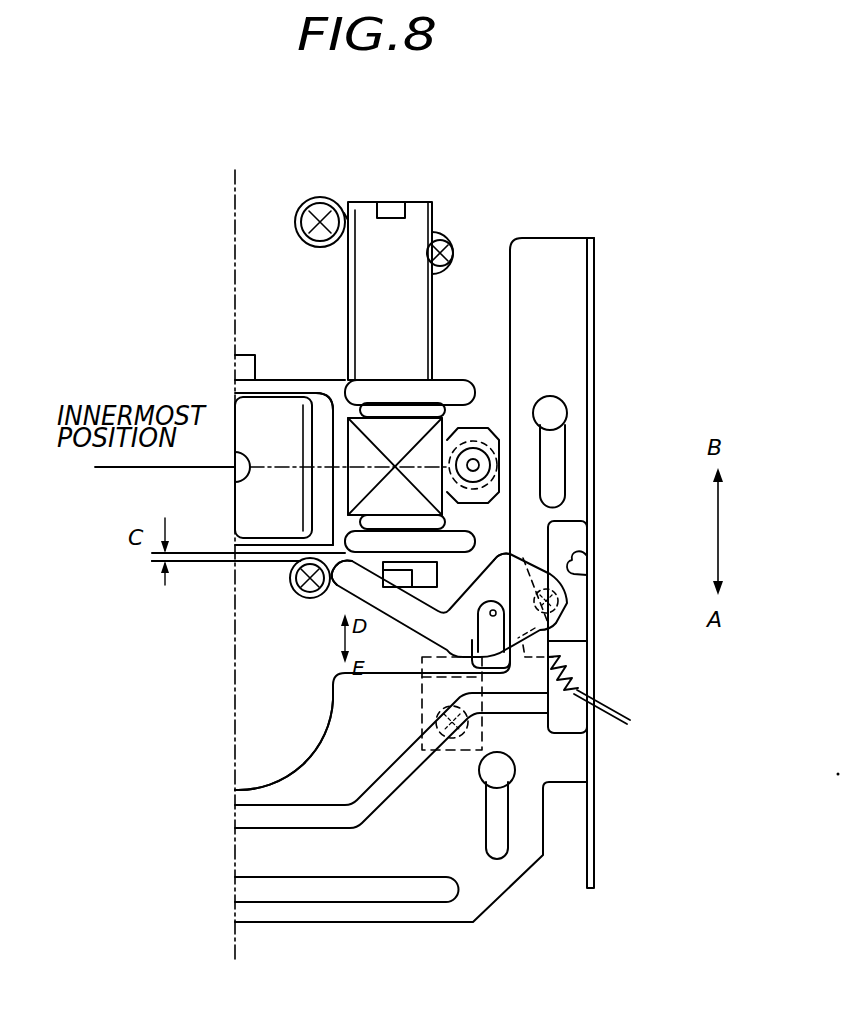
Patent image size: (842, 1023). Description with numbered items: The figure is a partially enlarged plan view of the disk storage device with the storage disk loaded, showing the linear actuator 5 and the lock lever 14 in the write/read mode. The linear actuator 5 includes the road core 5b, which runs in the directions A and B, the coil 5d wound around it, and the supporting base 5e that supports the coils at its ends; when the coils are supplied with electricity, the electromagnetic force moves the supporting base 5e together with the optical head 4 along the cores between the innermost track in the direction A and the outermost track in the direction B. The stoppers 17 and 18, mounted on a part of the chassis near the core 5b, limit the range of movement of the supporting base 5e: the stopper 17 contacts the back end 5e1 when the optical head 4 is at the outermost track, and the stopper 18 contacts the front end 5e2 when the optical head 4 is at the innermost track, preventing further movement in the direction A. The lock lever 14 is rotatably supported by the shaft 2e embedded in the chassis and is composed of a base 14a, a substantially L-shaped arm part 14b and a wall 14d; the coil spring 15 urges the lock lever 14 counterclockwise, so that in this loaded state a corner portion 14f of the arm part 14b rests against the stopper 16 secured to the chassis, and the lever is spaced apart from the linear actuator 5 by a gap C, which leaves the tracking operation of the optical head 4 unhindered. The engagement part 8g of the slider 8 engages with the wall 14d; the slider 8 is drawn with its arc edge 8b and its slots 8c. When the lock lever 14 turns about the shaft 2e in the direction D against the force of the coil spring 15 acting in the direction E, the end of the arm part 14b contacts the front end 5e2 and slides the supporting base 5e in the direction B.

The shaft 2e is at (572, 592).
The optical head 4 is at (286, 408).
The linear actuator 5 is at (482, 379).
The road core 5b is at (415, 300).
The coil 5d is at (445, 435).
The supporting base 5e is at (273, 554).
The back end of the supporting base 5e1 is at (325, 383).
The front end of the supporting base 5e2 is at (248, 554).
The slider 8 is at (372, 928).
The plate arc edge 8b is at (302, 780).
The keyhole slot 8c is at (560, 448).
The engagement part 8g is at (468, 610).
The lock lever 14 is at (397, 640).
The base 14a is at (558, 604).
The arm part 14b is at (348, 594).
The wall 14d is at (489, 590).
The corner portion 14f is at (478, 662).
The coil spring 15 is at (615, 712).
The stopper 16 is at (422, 662).
The stopper 17 is at (303, 207).
The stopper 18 is at (296, 594).